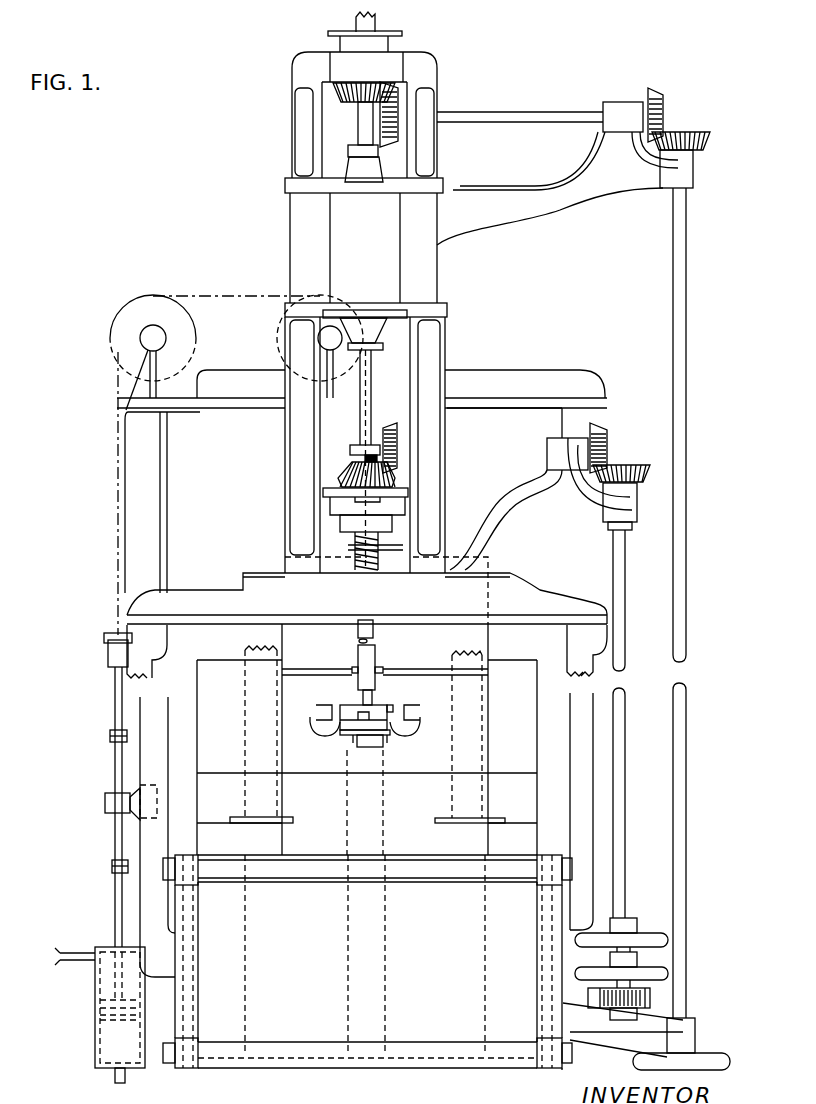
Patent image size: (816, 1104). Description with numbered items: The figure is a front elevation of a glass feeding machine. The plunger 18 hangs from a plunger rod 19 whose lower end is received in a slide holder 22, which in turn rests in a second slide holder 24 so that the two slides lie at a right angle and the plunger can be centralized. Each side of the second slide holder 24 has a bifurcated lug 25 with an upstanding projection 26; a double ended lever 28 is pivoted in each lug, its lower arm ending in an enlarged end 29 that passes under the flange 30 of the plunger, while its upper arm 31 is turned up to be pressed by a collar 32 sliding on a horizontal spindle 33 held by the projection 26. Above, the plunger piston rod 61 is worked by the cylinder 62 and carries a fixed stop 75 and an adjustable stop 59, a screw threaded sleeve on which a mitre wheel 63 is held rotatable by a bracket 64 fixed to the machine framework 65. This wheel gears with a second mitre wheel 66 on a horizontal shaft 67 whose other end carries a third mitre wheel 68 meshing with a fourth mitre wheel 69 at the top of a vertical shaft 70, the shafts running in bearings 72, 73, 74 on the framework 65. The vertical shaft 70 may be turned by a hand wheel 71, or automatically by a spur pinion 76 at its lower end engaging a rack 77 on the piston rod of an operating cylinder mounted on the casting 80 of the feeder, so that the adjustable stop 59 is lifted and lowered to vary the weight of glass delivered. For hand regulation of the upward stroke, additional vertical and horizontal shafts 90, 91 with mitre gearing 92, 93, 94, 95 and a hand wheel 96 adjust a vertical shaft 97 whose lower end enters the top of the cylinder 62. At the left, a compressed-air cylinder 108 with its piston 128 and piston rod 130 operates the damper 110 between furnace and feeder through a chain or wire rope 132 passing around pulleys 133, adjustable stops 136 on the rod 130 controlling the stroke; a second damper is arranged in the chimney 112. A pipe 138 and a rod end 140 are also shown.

The plunger 18 is at (386, 985).
The plunger rod 19 is at (358, 688).
The slide holder 22 is at (378, 705).
The second slide holder 24 is at (381, 732).
The bifurcated lug 25 is at (402, 733).
The upstanding projection 26 is at (391, 708).
The double ended lever 28 is at (395, 731).
The enlarged end 29 is at (378, 743).
The flange 30 is at (347, 745).
The upper arm 31 is at (422, 716).
The collar 32 is at (414, 704).
The horizontal spindle 33 is at (330, 706).
The adjustable stop 59 is at (352, 462).
The plunger piston rod 61 is at (372, 385).
The cylinder 62 is at (366, 255).
The mitre wheel 63 is at (338, 480).
The bracket 64 is at (323, 507).
The machine framework 65 is at (285, 492).
The second mitre wheel 66 is at (398, 428).
The horizontal shaft 67 is at (521, 440).
The third mitre wheel 68 is at (608, 442).
The fourth mitre wheel 69 is at (650, 479).
The vertical shaft 70 is at (628, 702).
The hand wheel 71 is at (668, 937).
The bearing 72 is at (440, 460).
The bearing 73 is at (541, 504).
The bearing 74 is at (593, 1043).
The fixed stop 75 is at (352, 445).
The spur pinion 76 is at (650, 998).
The rack 77 is at (570, 995).
The casting 80 is at (365, 955).
The vertical shaft 90 is at (517, 117).
The horizontal shaft 91 is at (688, 346).
The mitre gearing 92 is at (364, 102).
The mitre gearing 93 is at (398, 140).
The mitre gearing 94 is at (663, 98).
The mitre gearing 95 is at (706, 140).
The hand wheel 96 is at (730, 1060).
The vertical shaft 97 is at (358, 130).
The cylinder 108 is at (147, 957).
The damper 110 is at (243, 574).
The chimney 112 is at (247, 760).
The piston 128 is at (110, 1023).
The piston rod 130 is at (113, 692).
The chain or wire rope 132 is at (118, 506).
The pulley 133 is at (143, 298).
The adjustable stop 136 is at (112, 742).
The pipe 138 is at (62, 956).
The piston rod 140 is at (113, 1083).